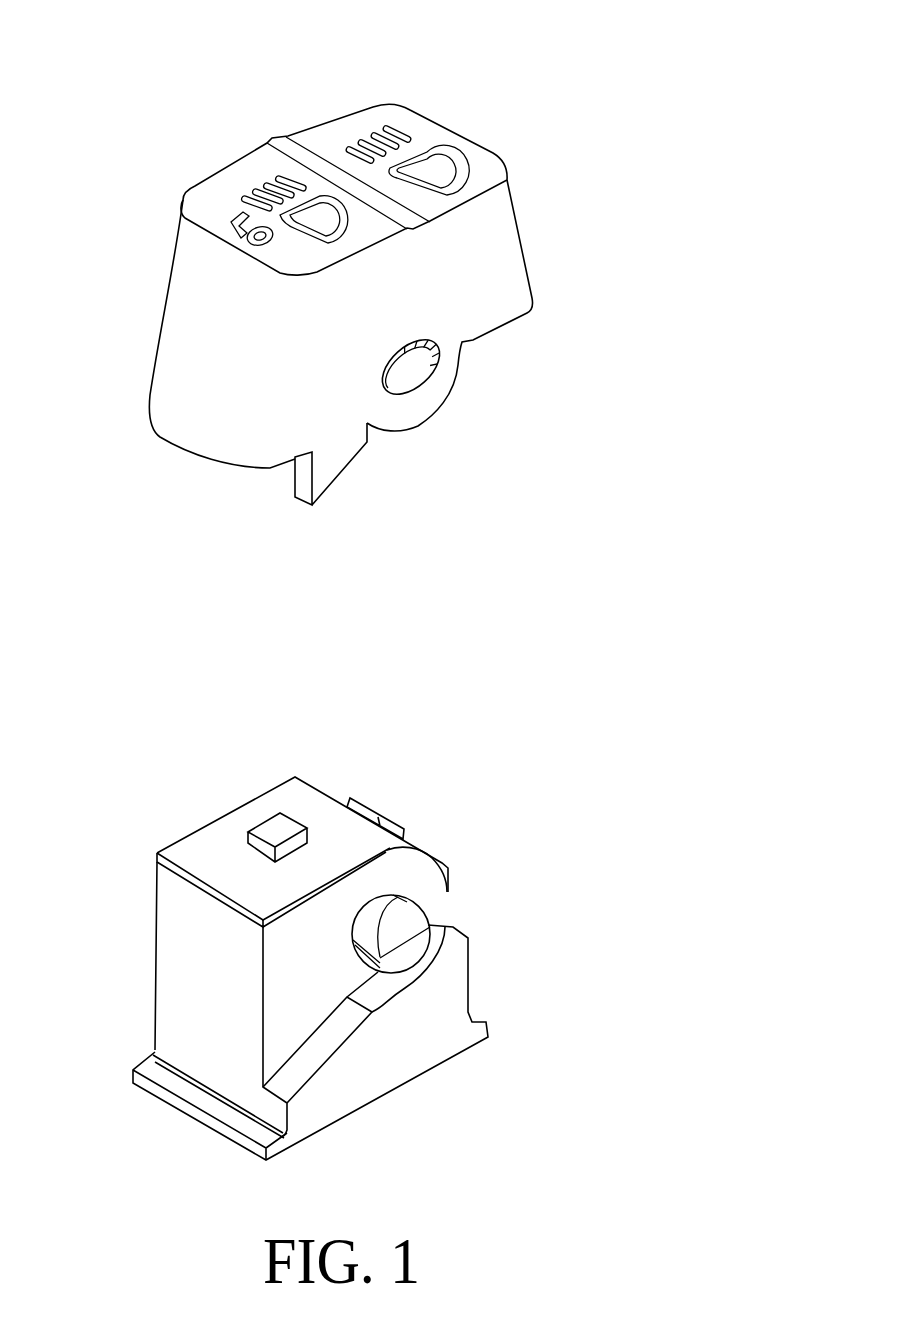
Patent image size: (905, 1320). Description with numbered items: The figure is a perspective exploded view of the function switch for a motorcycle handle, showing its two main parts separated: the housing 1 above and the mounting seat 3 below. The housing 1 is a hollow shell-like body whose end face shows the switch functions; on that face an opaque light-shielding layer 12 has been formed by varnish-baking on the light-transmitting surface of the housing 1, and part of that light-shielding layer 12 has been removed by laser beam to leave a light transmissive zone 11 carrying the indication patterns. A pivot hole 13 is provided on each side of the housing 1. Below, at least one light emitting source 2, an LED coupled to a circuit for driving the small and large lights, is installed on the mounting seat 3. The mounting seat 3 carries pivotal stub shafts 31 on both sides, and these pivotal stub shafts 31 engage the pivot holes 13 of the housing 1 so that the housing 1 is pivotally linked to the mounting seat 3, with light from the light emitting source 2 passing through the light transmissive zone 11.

The housing 1 is at (523, 220).
The light transmissive zone 11 is at (397, 132).
The light-shielding layer 12 is at (330, 140).
The pivot hole 13 is at (411, 369).
The light emitting source 2 is at (277, 827).
The mounting seat 3 is at (147, 957).
The pivotal stub shaft 31 is at (407, 923).